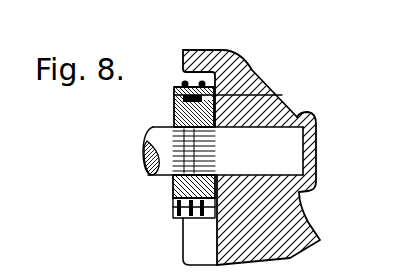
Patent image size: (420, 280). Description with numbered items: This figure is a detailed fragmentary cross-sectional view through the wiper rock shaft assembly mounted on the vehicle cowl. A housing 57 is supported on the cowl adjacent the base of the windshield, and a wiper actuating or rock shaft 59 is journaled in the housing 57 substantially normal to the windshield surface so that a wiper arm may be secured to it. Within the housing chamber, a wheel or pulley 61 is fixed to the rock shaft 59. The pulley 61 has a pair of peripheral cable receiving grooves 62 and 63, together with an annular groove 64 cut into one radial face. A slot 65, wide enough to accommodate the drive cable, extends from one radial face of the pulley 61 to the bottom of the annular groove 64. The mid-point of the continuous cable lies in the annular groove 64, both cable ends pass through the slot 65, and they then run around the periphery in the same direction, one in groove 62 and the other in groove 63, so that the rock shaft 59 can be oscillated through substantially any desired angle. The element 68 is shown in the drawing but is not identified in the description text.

The housing 57 is at (302, 232).
The wiper actuating or rock shaft 59 is at (309, 116).
The wheel or pulley 61 is at (176, 188).
The peripheral cable receiving groove 62 is at (177, 88).
The peripheral cable receiving groove 63 is at (282, 95).
The annular groove 64 is at (176, 113).
The slot 65 is at (175, 214).
The seal ring 68 is at (175, 97).